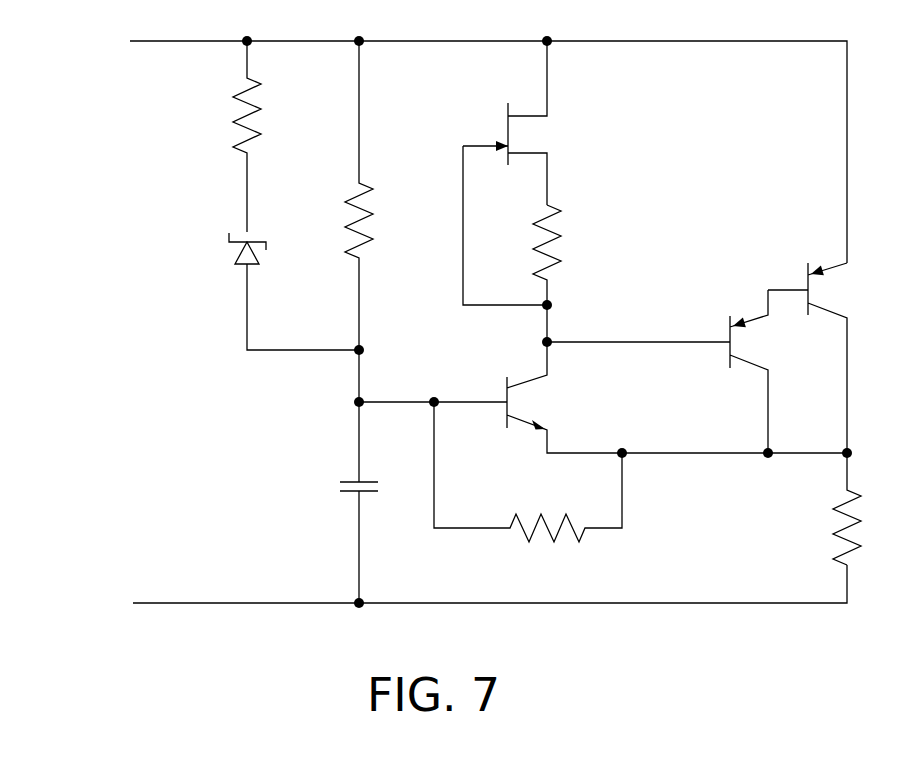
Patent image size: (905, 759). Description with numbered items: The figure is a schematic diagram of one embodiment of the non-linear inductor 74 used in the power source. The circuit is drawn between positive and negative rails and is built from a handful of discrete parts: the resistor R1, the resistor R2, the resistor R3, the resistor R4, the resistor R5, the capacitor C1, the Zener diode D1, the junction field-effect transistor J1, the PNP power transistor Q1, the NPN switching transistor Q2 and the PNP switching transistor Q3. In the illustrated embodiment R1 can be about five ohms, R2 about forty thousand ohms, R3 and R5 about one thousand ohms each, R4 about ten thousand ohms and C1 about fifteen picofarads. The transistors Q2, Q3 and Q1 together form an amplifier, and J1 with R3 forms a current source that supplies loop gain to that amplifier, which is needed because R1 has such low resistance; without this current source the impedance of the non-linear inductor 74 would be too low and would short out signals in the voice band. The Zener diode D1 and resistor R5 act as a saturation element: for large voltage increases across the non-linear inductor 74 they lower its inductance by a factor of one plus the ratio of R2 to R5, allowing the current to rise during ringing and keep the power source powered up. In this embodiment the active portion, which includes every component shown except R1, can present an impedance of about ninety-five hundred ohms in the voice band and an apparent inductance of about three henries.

The non-linear inductor 74 is at (102, 166).
The resistor R1 is at (825, 509).
The resistor R2 is at (387, 221).
The resistor R3 is at (576, 273).
The resistor R4 is at (528, 491).
The resistor R5 is at (269, 136).
The capacitor C1 is at (334, 502).
The Zener diode D1 is at (274, 291).
The junction field-effect transistor J1 is at (526, 173).
The PNP power transistor Q1 is at (847, 358).
The NPN switching transistor Q2 is at (603, 397).
The PNP switching transistor Q3 is at (677, 371).